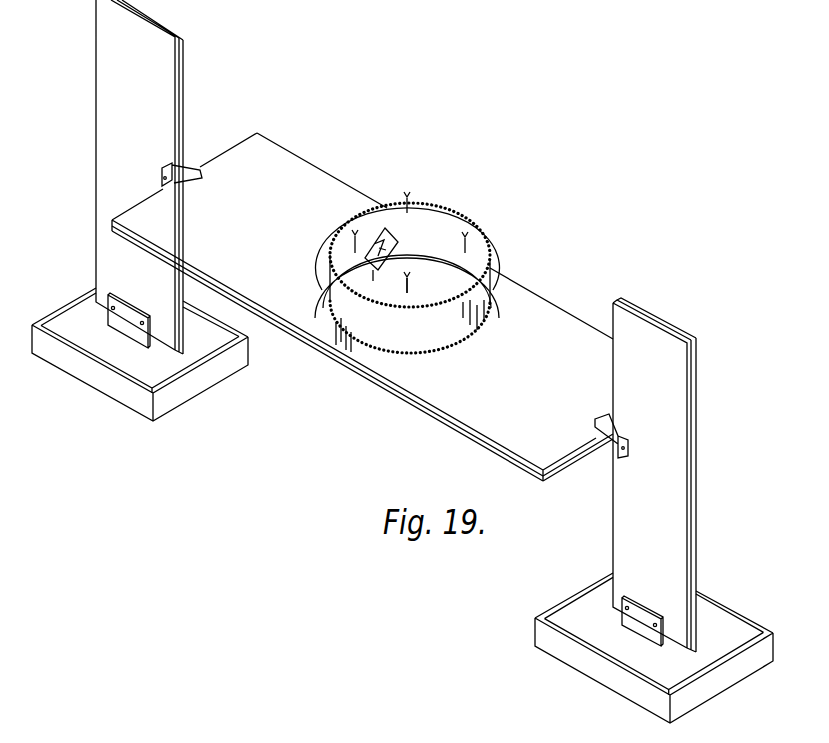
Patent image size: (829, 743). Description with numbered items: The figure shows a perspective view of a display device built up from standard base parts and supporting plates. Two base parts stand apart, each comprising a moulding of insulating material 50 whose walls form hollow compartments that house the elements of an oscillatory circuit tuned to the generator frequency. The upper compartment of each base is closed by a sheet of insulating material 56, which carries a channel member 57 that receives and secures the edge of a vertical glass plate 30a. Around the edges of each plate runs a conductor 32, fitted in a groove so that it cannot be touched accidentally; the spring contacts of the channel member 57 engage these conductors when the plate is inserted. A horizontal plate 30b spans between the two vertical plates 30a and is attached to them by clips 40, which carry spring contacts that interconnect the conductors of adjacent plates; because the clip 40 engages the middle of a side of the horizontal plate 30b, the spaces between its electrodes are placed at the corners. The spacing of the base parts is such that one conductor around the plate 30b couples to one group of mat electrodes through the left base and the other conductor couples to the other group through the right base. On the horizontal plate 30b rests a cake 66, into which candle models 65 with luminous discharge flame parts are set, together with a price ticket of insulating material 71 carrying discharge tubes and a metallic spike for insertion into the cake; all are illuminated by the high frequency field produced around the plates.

The vertical glass plate 30a is at (160, 80).
The horizontal plate 30b is at (328, 172).
The conductor 32 is at (158, 25).
The clip 40 is at (189, 187).
The moulding of insulating material 50 is at (205, 377).
The sheet of insulating material 56 is at (153, 394).
The channel member 57 is at (125, 331).
The candle 65 is at (410, 285).
The cake 66 is at (476, 258).
The ticket of insulating material 71 is at (398, 238).